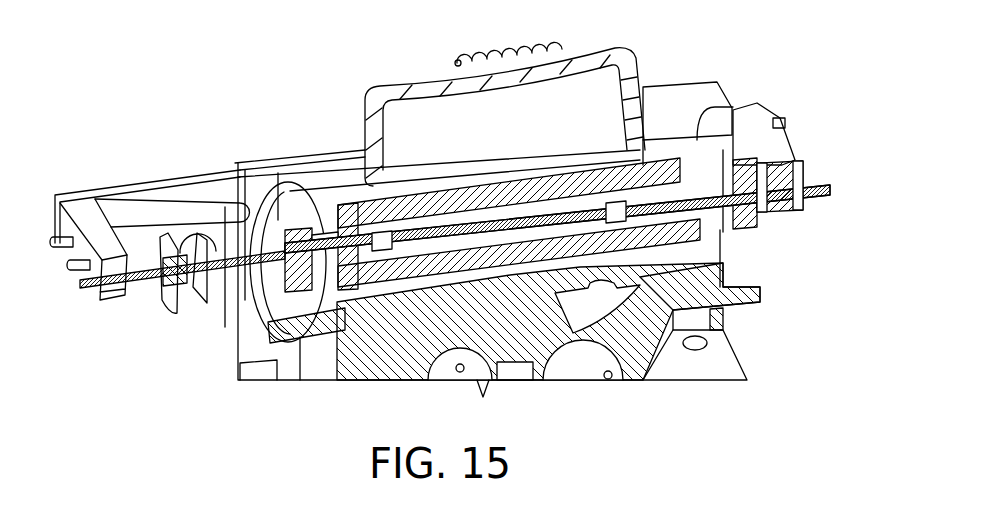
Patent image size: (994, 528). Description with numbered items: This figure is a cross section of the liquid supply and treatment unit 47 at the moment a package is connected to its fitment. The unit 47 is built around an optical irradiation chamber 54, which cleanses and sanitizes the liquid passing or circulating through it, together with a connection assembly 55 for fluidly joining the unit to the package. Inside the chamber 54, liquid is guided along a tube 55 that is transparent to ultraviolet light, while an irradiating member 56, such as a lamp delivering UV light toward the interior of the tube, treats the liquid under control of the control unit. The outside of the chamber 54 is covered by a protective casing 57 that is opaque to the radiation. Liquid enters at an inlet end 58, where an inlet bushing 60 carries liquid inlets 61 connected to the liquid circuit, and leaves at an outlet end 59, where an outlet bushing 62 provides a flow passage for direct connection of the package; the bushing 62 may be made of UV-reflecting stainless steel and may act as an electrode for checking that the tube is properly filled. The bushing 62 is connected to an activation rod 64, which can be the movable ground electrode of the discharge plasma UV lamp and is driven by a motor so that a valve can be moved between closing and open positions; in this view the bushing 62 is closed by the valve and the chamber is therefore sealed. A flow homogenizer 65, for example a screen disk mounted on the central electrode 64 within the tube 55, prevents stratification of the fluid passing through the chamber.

The liquid supply and treatment unit 47 is at (505, 114).
The optical irradiation chamber 54 is at (407, 300).
The tube 55 is at (532, 210).
The irradiating member 56 is at (492, 205).
The protective casing 57 is at (710, 253).
The inlet end 58 is at (647, 177).
The outlet end 59 is at (375, 240).
The inlet bushing 60 is at (720, 245).
The liquid inlet 61 is at (720, 187).
The outlet bushing 62 is at (320, 327).
The activation rod 64 is at (455, 212).
The flow homogenizer 65 is at (377, 280).